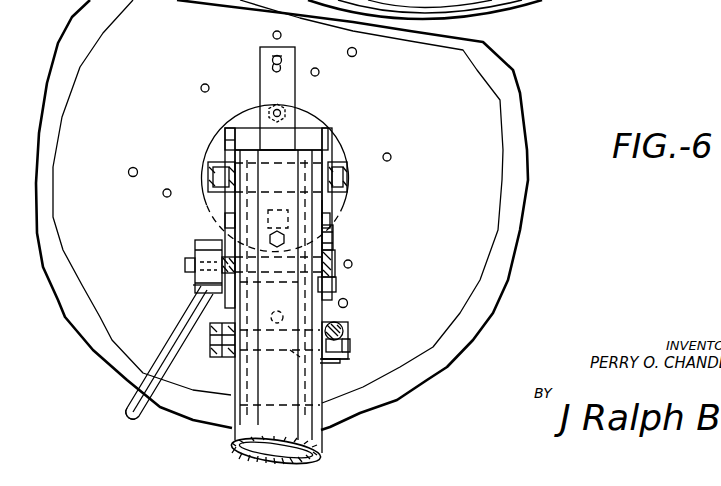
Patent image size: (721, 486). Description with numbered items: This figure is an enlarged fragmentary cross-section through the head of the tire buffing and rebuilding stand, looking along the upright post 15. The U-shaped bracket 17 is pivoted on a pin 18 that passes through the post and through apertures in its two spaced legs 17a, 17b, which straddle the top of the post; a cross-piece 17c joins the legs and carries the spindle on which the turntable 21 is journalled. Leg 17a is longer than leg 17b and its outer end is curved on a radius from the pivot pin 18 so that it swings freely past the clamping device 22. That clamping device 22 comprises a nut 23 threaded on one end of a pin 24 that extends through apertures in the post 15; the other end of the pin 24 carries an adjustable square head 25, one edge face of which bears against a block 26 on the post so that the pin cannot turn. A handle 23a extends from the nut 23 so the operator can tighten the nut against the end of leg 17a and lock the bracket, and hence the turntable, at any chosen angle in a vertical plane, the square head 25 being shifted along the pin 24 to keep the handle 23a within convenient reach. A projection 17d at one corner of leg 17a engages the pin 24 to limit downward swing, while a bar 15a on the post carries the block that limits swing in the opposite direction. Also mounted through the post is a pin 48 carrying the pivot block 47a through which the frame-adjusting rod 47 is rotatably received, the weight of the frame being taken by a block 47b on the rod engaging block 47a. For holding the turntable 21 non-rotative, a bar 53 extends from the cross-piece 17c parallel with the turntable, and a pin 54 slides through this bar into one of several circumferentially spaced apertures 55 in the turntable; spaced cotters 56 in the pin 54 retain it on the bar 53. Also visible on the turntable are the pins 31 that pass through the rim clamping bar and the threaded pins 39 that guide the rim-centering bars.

The post 15 is at (308, 437).
The bar 15a is at (323, 211).
The U-shaped bracket 17 is at (317, 118).
The leg 17a is at (229, 147).
The leg 17b is at (328, 147).
The cross-piece 17c is at (247, 131).
The projection 17d is at (218, 118).
The pin 18 is at (337, 167).
The turntable 21 is at (502, 222).
The clamping device 22 is at (157, 308).
The nut 23 is at (200, 252).
The handle 23a is at (133, 400).
The pin 24 is at (230, 258).
The square head 25 is at (322, 256).
The block 26 is at (335, 286).
The pin 31 is at (281, 35).
The threaded pin 39 is at (148, 166).
The rod 47 is at (348, 328).
The block 47a is at (350, 340).
The block 47b is at (340, 362).
The pin 48 is at (300, 357).
The bar 53 is at (260, 53).
The pin 54 is at (283, 62).
The aperture 55 is at (148, 199).
The cotter 56 is at (278, 58).